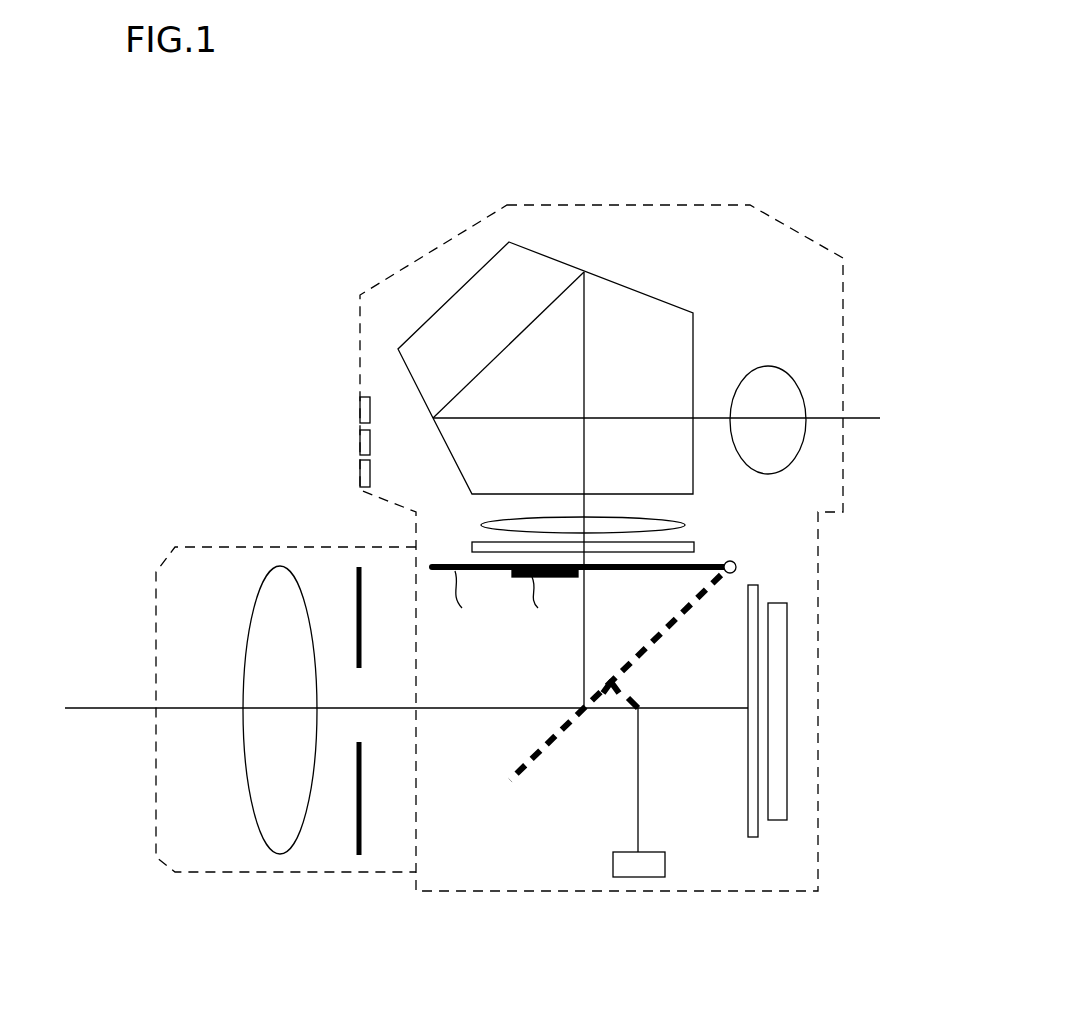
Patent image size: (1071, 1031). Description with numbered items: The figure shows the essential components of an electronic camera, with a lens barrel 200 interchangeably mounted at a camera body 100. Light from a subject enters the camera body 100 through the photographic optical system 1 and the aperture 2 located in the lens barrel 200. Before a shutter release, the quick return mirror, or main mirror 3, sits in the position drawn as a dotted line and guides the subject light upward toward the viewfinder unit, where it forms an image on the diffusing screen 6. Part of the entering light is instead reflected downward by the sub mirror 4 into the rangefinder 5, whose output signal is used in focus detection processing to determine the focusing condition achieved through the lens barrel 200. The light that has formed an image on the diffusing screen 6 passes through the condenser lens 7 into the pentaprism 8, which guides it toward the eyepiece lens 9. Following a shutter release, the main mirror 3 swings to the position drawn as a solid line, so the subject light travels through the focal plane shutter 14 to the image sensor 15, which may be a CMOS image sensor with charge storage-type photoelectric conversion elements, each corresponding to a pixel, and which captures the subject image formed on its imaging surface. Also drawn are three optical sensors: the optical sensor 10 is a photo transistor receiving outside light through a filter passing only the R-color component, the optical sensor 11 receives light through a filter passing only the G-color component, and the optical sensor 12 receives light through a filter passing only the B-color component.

The photographic optical system 1 is at (268, 847).
The aperture 2 is at (355, 845).
The quick return mirror (main mirror) 3 is at (510, 780).
The sub mirror 4 is at (648, 718).
The rangefinder 5 is at (640, 870).
The diffusing screen 6 is at (690, 545).
The condenser lens 7 is at (685, 523).
The pentaprism 8 is at (620, 316).
The eyepiece lens 9 is at (787, 440).
The optical sensor 10 is at (360, 410).
The optical sensor 11 is at (360, 443).
The optical sensor 12 is at (360, 476).
The focal plane shutter 14 is at (756, 580).
The image sensor 15 is at (778, 730).
The camera body 100 is at (525, 891).
The lens barrel 200 is at (290, 872).